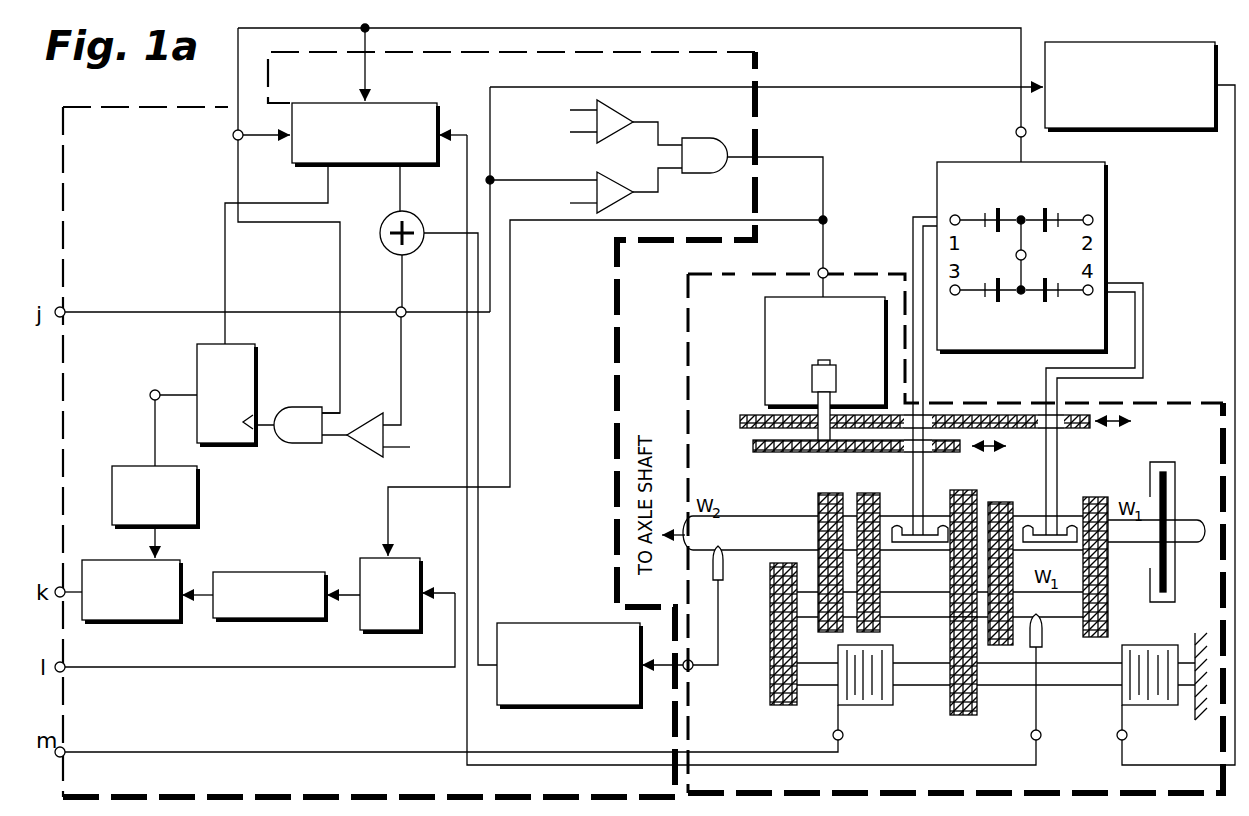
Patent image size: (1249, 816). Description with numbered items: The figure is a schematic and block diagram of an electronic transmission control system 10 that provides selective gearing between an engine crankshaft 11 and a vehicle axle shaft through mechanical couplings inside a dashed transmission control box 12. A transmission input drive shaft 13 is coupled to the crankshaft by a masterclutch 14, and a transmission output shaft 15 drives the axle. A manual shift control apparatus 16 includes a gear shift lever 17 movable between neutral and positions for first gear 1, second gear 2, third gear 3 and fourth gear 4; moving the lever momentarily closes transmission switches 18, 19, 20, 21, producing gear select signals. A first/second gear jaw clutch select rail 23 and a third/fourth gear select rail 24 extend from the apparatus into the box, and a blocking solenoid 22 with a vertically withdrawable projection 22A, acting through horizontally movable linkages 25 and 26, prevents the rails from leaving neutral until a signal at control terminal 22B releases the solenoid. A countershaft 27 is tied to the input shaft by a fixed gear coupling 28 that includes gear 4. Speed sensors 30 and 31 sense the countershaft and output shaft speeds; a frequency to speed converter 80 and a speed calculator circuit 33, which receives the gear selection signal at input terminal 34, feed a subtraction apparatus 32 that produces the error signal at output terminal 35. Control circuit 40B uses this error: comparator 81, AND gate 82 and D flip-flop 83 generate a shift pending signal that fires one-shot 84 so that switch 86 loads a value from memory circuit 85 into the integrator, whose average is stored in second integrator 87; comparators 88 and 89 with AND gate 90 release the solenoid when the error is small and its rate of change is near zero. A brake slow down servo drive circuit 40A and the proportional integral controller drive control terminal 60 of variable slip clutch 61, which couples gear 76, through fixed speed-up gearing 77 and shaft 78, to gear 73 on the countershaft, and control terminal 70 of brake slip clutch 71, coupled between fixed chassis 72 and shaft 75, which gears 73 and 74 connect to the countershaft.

The electronic transmission control system 10 is at (162, 99).
The engine crankshaft 11 is at (1200, 545).
The transmission control box 12 is at (733, 274).
The transmission input drive shaft 13 is at (1120, 545).
The masterclutch 14 is at (1166, 468).
The transmission output shaft 15 is at (750, 516).
The manual shift control apparatus 16 is at (1106, 165).
The manual gear shift lever 17 is at (1027, 256).
The transmission switch 18 is at (996, 208).
The transmission switch 19 is at (1055, 208).
The transmission switch 20 is at (996, 303).
The transmission switch 21 is at (1055, 303).
The blocking solenoid 22 is at (765, 312).
The extending projection 22A is at (812, 378).
The control terminal 22B is at (828, 270).
The 1st/2nd gear jaw clutch select rail 23 is at (912, 484).
The 3rd/4th gear jaw clutch select rail 24 is at (1060, 452).
The horizontally moveable linkage 25 is at (740, 421).
The horizontally moveable linkage 26 is at (753, 446).
The countershaft 27 is at (916, 592).
The fixed gear coupling 28 is at (1108, 628).
The speed sensor 30 is at (1043, 646).
The speed sensor 31 is at (724, 574).
The subtraction apparatus 32 is at (382, 220).
The speed calculator circuit 33 is at (288, 166).
The input terminal 34 is at (233, 135).
The output terminal 35 is at (397, 308).
The proportional integral control circuit 40A is at (1218, 62).
The control circuit 40B is at (758, 52).
The control terminal 60 is at (832, 735).
The variable slip clutch 61 is at (873, 707).
The control terminal 70 is at (1116, 735).
The brake slip clutch 71 is at (1157, 707).
The fixed chassis 72 is at (1196, 720).
The gear 73 is at (966, 716).
The gear 74 is at (950, 633).
The shaft 75 is at (925, 688).
The gear 76 is at (770, 688).
The fixed speed-up gearing 77 is at (820, 493).
The shaft 78 is at (812, 688).
The frequency to speed converter 80 is at (562, 623).
The comparator 81 is at (375, 413).
The AND gate 82 is at (302, 407).
The D flip-flop 83 is at (256, 346).
The monostable multivibrator (one-shot) 84 is at (201, 497).
The memory circuit 85 is at (280, 572).
The switch 86 is at (130, 624).
The second integrator circuit 87 is at (360, 560).
The comparator 88 is at (632, 116).
The comparator 89 is at (612, 172).
The AND gate 90 is at (702, 138).
The first gear 1 is at (858, 493).
The second gear 2 is at (960, 493).
The third gear 3 is at (1000, 502).
The fourth gear 4 is at (1096, 497).